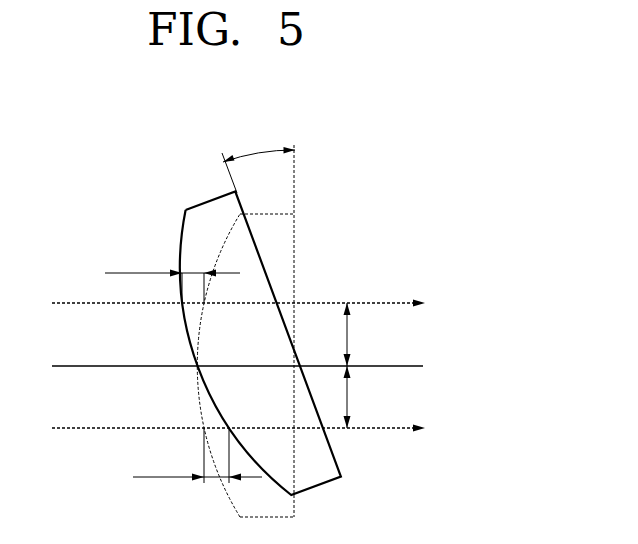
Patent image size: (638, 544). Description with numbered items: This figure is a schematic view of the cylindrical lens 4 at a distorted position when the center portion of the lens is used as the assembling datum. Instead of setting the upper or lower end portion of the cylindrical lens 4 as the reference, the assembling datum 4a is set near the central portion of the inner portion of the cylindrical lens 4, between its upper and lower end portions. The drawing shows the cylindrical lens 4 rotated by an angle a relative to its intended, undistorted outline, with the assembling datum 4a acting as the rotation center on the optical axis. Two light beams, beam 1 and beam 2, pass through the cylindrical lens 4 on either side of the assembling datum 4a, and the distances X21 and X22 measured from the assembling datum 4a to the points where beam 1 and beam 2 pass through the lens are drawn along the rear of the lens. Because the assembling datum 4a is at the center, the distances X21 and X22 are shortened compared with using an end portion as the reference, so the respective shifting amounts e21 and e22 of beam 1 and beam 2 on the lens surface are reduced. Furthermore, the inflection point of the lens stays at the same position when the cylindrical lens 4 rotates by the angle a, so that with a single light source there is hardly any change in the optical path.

The cylindrical lens 4 is at (176, 202).
The assembling datum 4a is at (393, 365).
The angle a is at (258, 159).
The shifting amount of beam 1 e21 is at (172, 273).
The shifting amount of beam 2 e22 is at (197, 455).
The distance from assembling datum to beam 1 passing point X21 is at (370, 334).
The distance from assembling datum to beam 2 passing point X22 is at (370, 397).
The beam 1 beam1 is at (393, 302).
The beam 2 beam2 is at (393, 427).